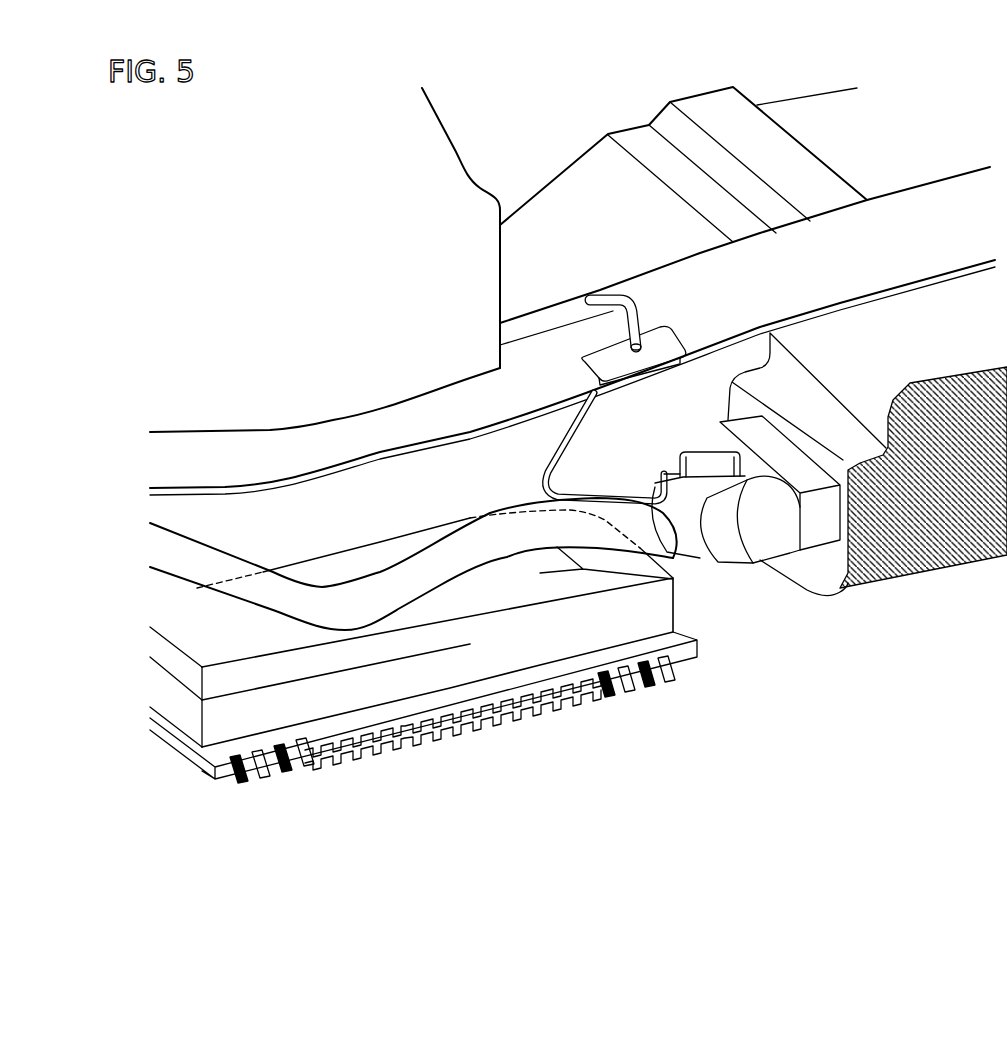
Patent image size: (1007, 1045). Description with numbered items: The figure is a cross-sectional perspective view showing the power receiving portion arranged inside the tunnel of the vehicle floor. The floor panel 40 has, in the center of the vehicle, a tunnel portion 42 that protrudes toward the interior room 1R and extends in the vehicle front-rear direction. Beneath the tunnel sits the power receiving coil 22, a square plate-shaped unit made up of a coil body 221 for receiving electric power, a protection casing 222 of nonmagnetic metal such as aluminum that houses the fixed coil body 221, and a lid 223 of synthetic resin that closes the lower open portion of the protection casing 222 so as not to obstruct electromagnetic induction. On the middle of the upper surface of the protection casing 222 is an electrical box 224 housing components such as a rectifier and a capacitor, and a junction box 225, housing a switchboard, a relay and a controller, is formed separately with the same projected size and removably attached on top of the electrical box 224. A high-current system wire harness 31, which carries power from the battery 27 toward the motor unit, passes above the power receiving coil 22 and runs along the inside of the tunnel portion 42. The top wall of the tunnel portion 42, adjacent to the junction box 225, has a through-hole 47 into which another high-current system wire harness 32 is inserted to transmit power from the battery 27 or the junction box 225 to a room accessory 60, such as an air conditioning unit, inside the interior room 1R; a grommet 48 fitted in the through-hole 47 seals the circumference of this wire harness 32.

The interior room 1R is at (547, 150).
The room accessory 60 is at (453, 147).
The floor panel 40 is at (607, 185).
The tunnel portion 42 is at (698, 278).
The high-current system wire harness 32 is at (543, 317).
The through-hole 47 is at (648, 317).
The grommet 48 is at (668, 335).
The high-current system wire harness 31 is at (218, 562).
The power receiving coil 22 is at (413, 757).
The coil body 221 is at (542, 717).
The protection casing 222 is at (283, 747).
The lid 223 is at (492, 730).
The electrical box 224 is at (340, 693).
The junction box 225 is at (427, 627).
The battery 27 is at (930, 590).